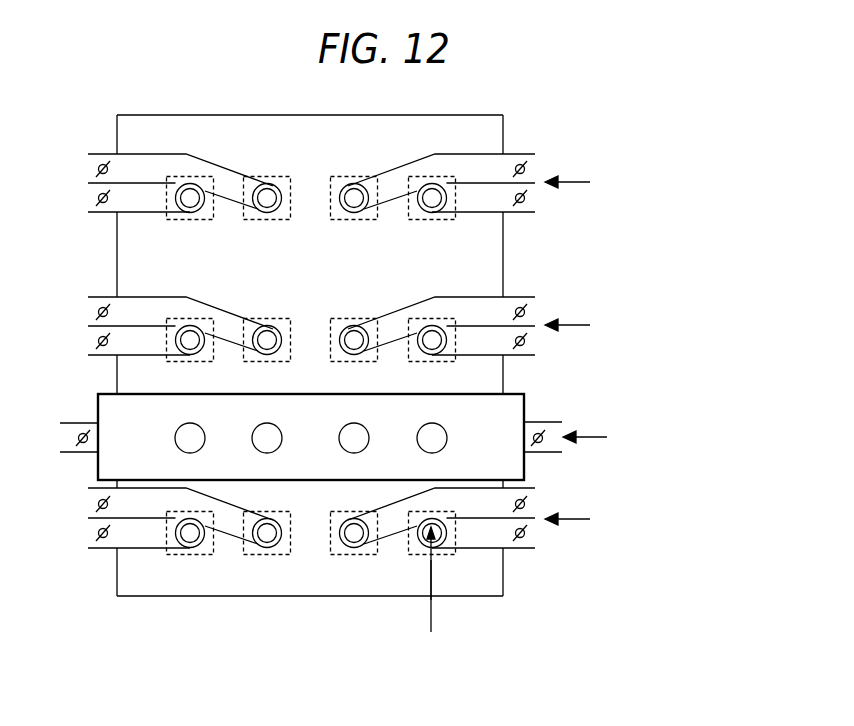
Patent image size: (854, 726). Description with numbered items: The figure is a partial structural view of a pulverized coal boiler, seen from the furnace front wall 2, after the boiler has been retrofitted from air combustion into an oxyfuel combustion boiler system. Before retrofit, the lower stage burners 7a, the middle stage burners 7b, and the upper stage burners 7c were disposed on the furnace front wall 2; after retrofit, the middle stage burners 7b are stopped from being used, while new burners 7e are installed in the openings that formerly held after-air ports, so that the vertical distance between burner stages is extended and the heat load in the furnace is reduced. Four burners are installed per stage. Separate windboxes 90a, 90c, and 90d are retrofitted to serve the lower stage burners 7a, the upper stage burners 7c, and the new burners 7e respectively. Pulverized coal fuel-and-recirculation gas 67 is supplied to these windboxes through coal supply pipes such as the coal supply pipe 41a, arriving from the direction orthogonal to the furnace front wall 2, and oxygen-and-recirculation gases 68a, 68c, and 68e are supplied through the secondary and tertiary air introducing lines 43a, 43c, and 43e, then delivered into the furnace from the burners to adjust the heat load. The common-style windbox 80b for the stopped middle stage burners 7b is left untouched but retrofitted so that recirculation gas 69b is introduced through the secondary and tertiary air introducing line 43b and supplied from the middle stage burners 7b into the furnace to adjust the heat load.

The furnace front wall 2 is at (503, 256).
The lower stage burners 7a is at (340, 535).
The middle stage burners 7b is at (339, 438).
The upper stage burners 7c is at (340, 342).
The burners 7e is at (340, 200).
The secondary and tertiary air introducing line 43a is at (232, 508).
The secondary and tertiary air introducing line 43b is at (530, 421).
The secondary and tertiary air introducing line 43c is at (234, 314).
The oxygen and recirculation gas supply pipe 43e is at (234, 172).
The windbox 90a is at (195, 557).
The windbox 90c is at (197, 319).
The windbox 90d is at (197, 177).
The windbox 80b is at (104, 462).
The oxygen-and-recirculation gas 68a is at (663, 519).
The oxygen-and-recirculation gas 68c is at (663, 324).
The oxygen and recirculation gas supply 68e is at (663, 182).
The recirculation gas 69b is at (682, 436).
The pulverized coal fuel-and-recirculation gas 67 is at (430, 611).
The coal supply pipe 41a is at (432, 585).